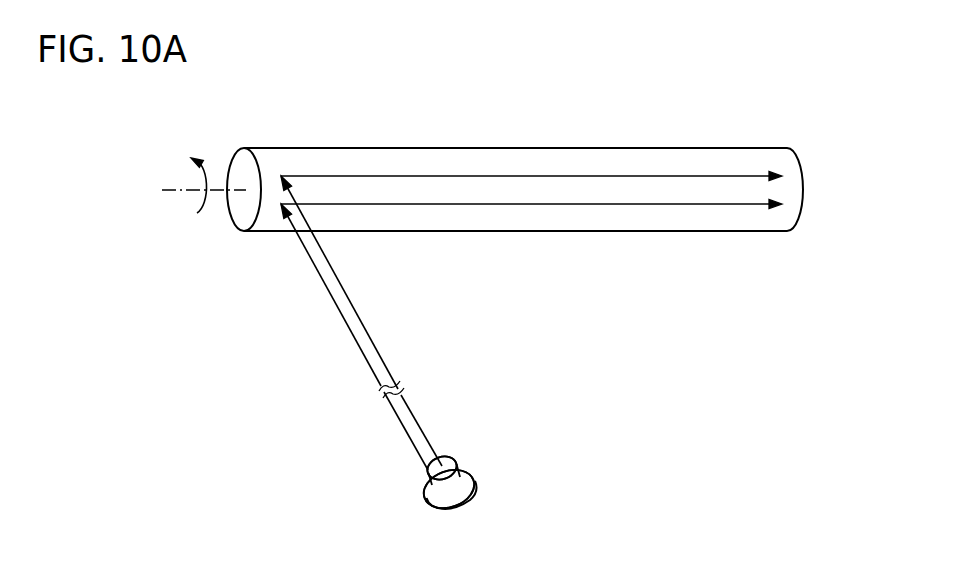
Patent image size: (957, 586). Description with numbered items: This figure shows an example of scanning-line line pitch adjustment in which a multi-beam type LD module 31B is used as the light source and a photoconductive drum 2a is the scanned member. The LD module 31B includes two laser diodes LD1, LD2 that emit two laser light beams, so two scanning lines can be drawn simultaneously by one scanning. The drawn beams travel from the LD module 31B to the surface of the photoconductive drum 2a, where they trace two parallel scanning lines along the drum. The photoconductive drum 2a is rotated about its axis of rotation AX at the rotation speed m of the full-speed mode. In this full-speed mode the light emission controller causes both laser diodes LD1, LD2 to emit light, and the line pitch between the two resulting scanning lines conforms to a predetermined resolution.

The photoconductive drum 2a is at (748, 150).
The axis of rotation AX is at (181, 195).
The rotation speed m is at (187, 182).
The laser diode LD1 is at (457, 463).
The laser diode LD2 is at (433, 471).
The LD module 31B is at (412, 498).